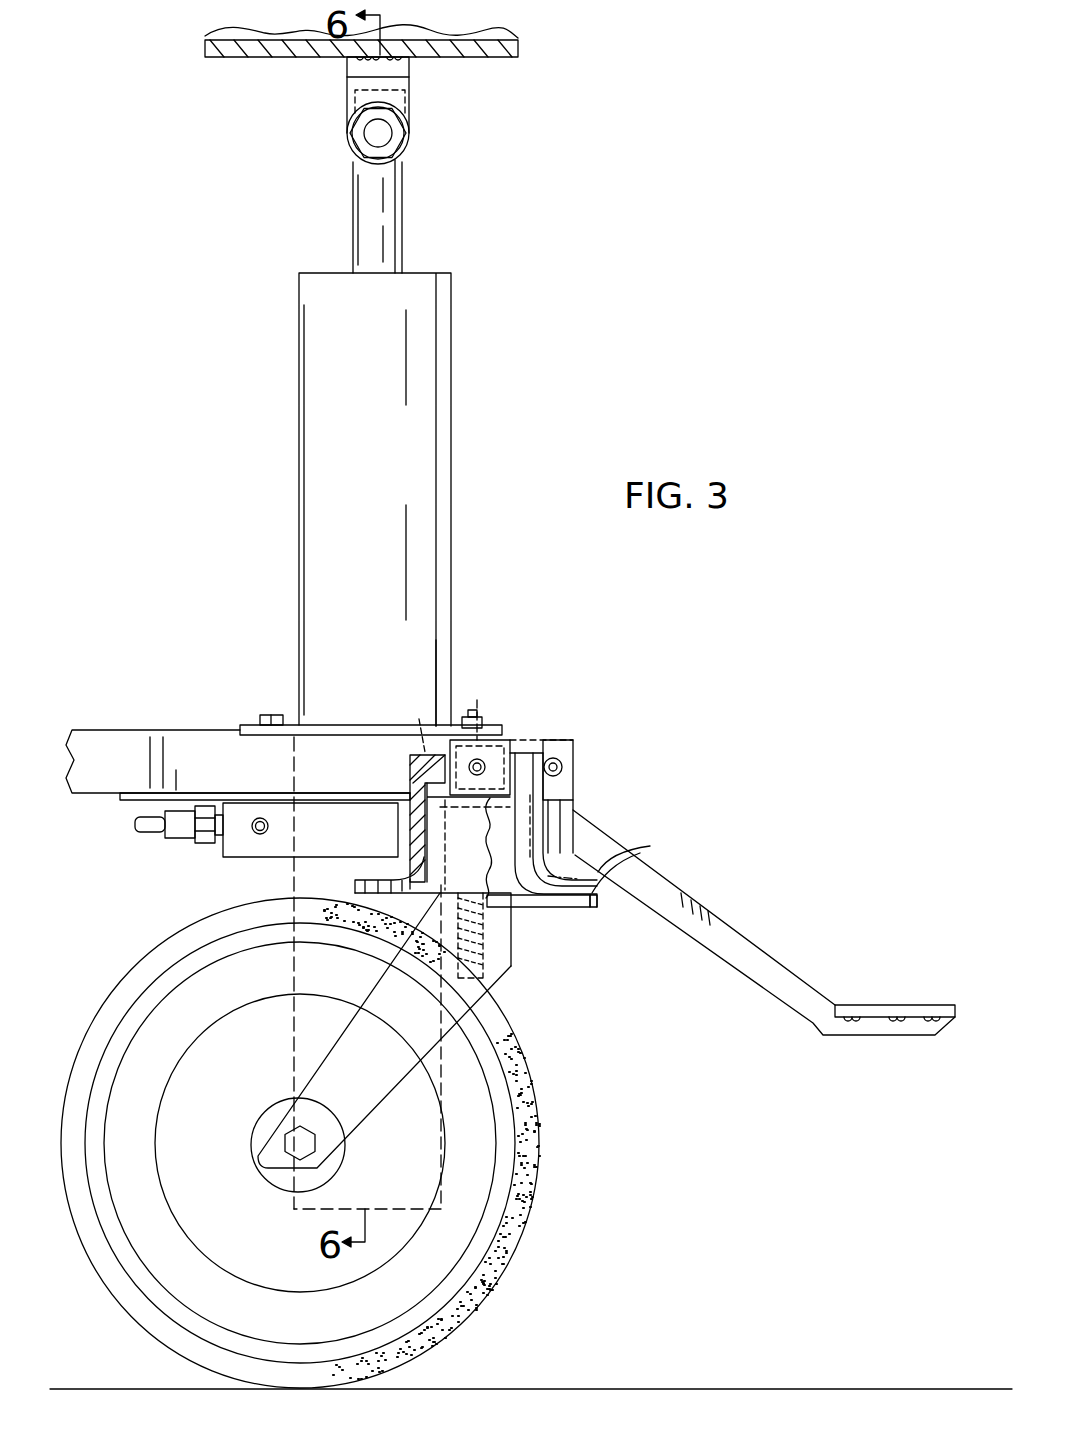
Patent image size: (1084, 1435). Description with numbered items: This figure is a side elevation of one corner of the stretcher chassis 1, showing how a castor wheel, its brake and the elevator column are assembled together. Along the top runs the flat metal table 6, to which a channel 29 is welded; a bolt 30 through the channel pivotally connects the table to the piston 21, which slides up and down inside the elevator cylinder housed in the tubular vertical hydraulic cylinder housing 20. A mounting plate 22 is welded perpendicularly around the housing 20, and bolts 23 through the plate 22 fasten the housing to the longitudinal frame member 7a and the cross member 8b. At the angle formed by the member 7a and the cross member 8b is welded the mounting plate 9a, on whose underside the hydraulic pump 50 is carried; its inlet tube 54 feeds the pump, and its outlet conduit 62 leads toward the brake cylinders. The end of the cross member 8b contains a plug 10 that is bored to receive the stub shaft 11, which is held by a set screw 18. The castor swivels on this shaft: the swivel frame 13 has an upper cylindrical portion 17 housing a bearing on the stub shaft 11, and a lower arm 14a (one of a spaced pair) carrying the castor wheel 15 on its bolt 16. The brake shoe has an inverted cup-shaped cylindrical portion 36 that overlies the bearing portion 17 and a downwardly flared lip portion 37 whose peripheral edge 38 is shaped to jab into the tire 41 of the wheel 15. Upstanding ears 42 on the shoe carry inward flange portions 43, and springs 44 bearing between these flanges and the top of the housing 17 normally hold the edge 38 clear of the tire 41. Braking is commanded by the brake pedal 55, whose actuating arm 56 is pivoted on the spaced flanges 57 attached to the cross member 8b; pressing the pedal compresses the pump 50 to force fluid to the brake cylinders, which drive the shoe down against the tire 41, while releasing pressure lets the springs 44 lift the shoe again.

The chassis portion 1 is at (648, 691).
The flat table 6 is at (500, 58).
The longitudinally extending member 7a is at (122, 742).
The cross member 8b is at (434, 724).
The mounting plate 9a is at (125, 801).
The plug 10 is at (515, 735).
The stub shaft 11 is at (494, 724).
The swivel frame 13 is at (514, 942).
The arm 14a is at (379, 1102).
The castor wheel 15 is at (214, 1092).
The bolt 16 is at (287, 1155).
The cylindrical portion 17 is at (458, 838).
The set screw 18 is at (547, 741).
The hydraulic cylinder housing 20 is at (442, 425).
The piston 21 is at (398, 220).
The mounting plate 22 is at (453, 724).
The bolts 23 is at (270, 714).
The channel 29 is at (411, 92).
The bolt 30 is at (386, 135).
The brake shoe cylindrical portion 36 is at (548, 808).
The flared peripheral lip portion 37 is at (613, 859).
The peripheral edge 38 is at (356, 902).
The tire 41 is at (540, 1127).
The upstanding ears 42 is at (410, 766).
The flange portions 43 is at (419, 719).
The springs 44 is at (477, 943).
The hydraulic pump 50 is at (234, 860).
The inlet tube 54 is at (150, 834).
The brake pedal 55 is at (903, 1003).
The actuating arm 56 is at (770, 968).
The spaced flanges 57 is at (561, 763).
The conduit 62 is at (265, 834).